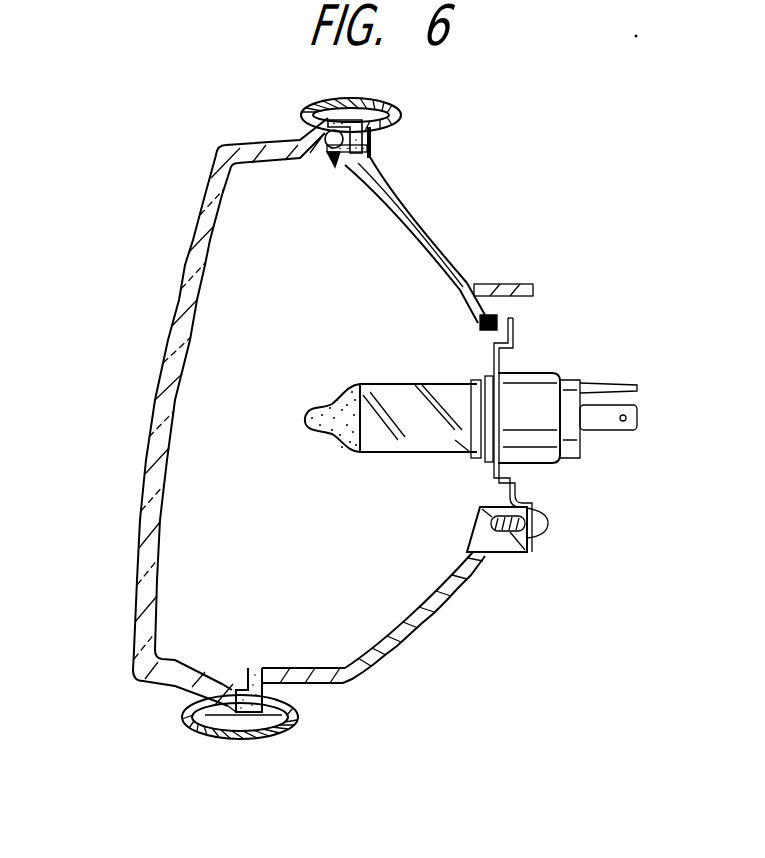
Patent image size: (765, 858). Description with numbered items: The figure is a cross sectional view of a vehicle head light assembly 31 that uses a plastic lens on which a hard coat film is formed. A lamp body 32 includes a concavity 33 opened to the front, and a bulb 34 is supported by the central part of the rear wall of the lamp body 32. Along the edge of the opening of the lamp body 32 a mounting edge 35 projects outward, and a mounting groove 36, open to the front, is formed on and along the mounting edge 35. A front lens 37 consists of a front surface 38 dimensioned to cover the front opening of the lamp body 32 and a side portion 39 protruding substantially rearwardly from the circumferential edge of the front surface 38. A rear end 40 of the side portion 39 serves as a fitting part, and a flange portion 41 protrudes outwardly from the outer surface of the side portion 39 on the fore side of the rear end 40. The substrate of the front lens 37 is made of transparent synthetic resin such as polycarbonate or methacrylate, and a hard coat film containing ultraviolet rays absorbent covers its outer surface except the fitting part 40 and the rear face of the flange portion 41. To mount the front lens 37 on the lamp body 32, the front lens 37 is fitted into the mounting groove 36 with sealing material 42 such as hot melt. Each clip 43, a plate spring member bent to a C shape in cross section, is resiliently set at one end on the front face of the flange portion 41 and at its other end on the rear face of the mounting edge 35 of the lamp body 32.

The vehicle head light assembly 31 is at (147, 200).
The lamp body 32 is at (443, 603).
The concavity 33 is at (327, 668).
The bulb 34 is at (377, 390).
The mounting edge 35 is at (373, 137).
The mounting groove 36 is at (327, 147).
The front lens 37 is at (170, 333).
The front surface 38 is at (150, 485).
The side portion 39 is at (163, 692).
The rear end 40 is at (243, 688).
The flange portion 41 is at (205, 735).
The sealing material 42 is at (352, 152).
The clip 43 is at (250, 740).